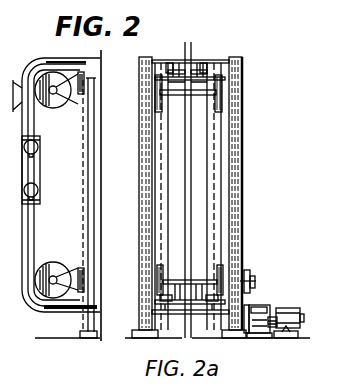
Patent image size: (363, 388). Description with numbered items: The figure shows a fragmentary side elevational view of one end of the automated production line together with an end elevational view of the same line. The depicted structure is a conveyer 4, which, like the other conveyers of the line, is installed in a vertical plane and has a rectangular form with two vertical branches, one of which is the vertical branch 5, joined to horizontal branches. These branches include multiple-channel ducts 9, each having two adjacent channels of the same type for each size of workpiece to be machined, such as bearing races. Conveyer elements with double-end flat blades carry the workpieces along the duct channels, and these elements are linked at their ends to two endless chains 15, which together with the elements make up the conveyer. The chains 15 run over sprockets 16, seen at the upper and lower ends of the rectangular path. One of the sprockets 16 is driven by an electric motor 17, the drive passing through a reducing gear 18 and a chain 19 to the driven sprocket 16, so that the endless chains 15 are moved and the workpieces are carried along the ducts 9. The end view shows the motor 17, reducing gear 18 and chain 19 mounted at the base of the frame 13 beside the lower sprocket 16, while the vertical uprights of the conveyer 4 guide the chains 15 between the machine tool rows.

In FIG. 2, the conveyer 4 is at (95, 188).
In FIG. 2, the vertical branch 5 is at (36, 168).
In FIG. 2A, the multiple-channel duct 9 is at (195, 57).
In FIG. 2A, the frame 13 is at (240, 160).
In FIG. 2A, the endless chain 15 is at (153, 145).
In FIG. 2A, the sprocket 16 is at (222, 83).
In FIG. 2A, the electric motor 17 is at (298, 312).
In FIG. 2A, the reducing gear 18 is at (266, 307).
In FIG. 2A, the chain 19 is at (250, 305).